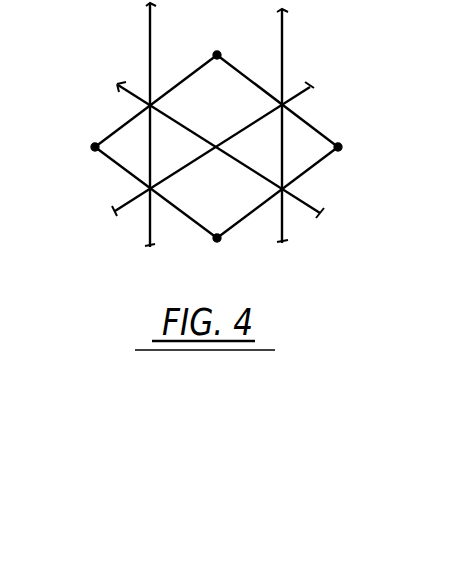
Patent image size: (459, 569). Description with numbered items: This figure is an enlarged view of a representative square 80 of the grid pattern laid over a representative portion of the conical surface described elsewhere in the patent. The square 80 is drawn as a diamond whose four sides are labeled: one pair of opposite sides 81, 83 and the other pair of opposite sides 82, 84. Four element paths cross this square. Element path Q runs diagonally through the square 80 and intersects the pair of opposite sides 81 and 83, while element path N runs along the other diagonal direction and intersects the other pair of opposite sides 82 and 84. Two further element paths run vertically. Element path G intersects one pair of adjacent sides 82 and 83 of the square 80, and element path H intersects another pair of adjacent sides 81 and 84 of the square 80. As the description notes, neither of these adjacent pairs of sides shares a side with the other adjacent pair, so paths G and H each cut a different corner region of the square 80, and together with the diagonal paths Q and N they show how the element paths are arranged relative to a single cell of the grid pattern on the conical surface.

The square 80 is at (100, 140).
The side 81 is at (320, 130).
The side 82 is at (135, 113).
The side 83 is at (182, 215).
The side 84 is at (322, 165).
The element path G is at (151, 19).
The element path H is at (283, 30).
The element path Q is at (312, 90).
The element path N is at (300, 198).